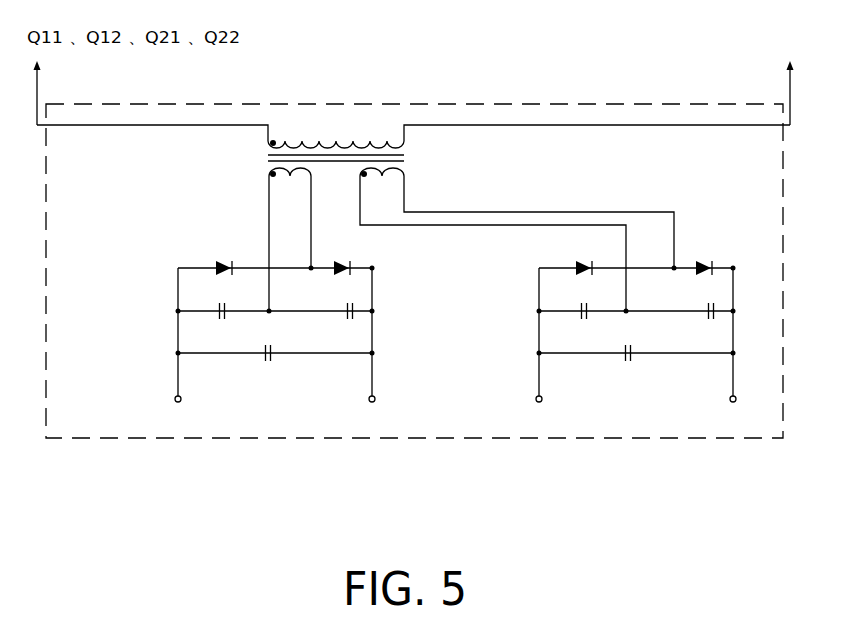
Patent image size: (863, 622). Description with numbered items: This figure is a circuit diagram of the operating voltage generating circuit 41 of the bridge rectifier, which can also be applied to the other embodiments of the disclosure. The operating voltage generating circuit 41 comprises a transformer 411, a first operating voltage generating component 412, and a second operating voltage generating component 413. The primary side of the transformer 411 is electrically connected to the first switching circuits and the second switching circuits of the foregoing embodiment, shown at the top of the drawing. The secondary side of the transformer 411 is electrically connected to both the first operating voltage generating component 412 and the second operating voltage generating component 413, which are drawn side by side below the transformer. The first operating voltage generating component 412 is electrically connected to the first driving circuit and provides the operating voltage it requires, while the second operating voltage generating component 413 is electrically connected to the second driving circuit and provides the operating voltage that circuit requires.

The operating voltage generating circuit 41 is at (604, 438).
The transformer 411 is at (353, 121).
The first operating voltage generating component 412 is at (201, 239).
The second operating voltage generating component 413 is at (752, 280).